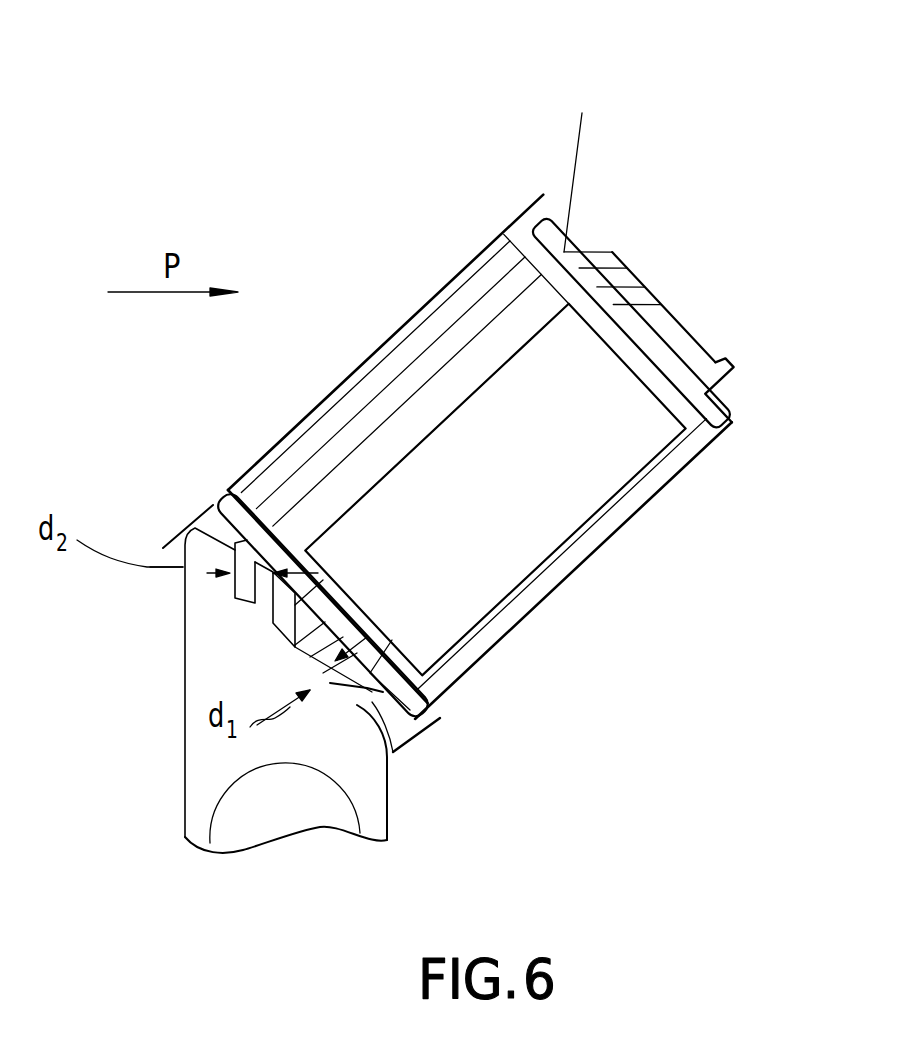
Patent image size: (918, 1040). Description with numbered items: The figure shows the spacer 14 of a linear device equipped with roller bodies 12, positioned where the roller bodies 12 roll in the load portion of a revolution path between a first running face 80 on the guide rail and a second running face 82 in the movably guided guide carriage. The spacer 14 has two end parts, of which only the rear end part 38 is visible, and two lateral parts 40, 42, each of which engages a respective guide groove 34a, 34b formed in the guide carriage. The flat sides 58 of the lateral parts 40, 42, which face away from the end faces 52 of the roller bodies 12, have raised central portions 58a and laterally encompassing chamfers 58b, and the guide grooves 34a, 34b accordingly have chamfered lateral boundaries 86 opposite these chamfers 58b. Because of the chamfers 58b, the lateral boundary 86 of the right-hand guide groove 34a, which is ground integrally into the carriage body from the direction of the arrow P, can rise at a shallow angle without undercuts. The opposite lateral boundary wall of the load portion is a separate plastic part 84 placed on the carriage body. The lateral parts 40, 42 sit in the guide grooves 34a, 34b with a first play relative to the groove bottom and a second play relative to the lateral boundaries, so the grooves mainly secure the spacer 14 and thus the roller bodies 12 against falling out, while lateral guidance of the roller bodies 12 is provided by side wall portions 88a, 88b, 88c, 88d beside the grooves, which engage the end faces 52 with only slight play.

The roller body 12 is at (487, 285).
The spacer 14 is at (425, 276).
The guide groove 34a is at (727, 363).
The guide groove 34b is at (350, 700).
The rear end part 38 is at (488, 573).
The lateral part 40 is at (667, 300).
The lateral part 42 is at (270, 618).
The end face 52 is at (580, 247).
The flat side 58 is at (295, 647).
The raised central portion 58a is at (683, 323).
The chamfer 58b is at (660, 250).
The first running face 80 is at (540, 200).
The second running face 82 is at (677, 480).
The plastic part 84 is at (197, 760).
The lateral boundary 86 is at (605, 250).
The side wall portion 88a is at (727, 408).
The side wall portion 88b is at (562, 247).
The side wall portion 88c is at (423, 717).
The side wall portion 88d is at (237, 562).